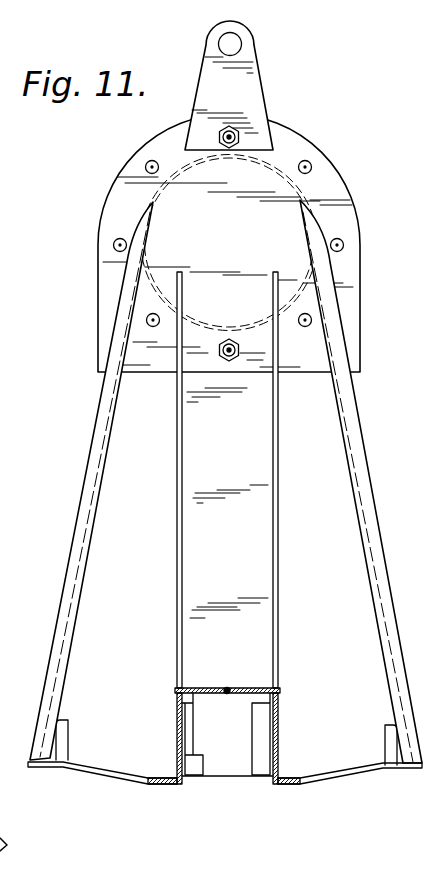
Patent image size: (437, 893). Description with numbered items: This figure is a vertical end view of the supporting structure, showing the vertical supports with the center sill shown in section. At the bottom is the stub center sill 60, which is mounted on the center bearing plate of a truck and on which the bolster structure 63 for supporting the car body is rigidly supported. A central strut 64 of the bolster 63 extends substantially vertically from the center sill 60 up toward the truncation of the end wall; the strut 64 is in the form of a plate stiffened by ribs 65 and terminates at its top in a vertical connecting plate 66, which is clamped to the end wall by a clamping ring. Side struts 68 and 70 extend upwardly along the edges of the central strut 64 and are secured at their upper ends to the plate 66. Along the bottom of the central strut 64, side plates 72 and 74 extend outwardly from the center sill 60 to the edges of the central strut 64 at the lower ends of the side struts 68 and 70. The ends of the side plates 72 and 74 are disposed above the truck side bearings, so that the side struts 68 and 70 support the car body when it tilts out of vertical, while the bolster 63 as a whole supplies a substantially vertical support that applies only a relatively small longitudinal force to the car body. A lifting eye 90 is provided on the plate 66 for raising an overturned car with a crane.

The stub center sill 60 is at (229, 688).
The bolster structure 63 is at (78, 475).
The central strut 64 is at (241, 446).
The ribs 65 is at (272, 522).
The vertical connecting plate 66 is at (249, 231).
The side strut 68 is at (100, 400).
The side strut 70 is at (355, 402).
The side plate 72 is at (108, 778).
The side plate 74 is at (358, 777).
The lifting eye 90 is at (255, 42).